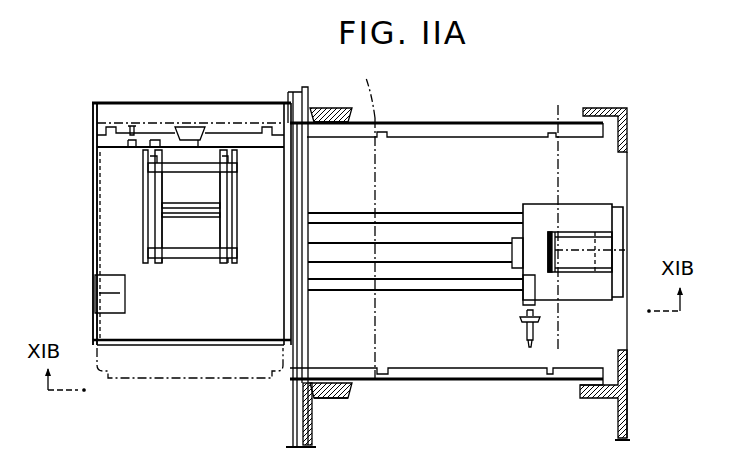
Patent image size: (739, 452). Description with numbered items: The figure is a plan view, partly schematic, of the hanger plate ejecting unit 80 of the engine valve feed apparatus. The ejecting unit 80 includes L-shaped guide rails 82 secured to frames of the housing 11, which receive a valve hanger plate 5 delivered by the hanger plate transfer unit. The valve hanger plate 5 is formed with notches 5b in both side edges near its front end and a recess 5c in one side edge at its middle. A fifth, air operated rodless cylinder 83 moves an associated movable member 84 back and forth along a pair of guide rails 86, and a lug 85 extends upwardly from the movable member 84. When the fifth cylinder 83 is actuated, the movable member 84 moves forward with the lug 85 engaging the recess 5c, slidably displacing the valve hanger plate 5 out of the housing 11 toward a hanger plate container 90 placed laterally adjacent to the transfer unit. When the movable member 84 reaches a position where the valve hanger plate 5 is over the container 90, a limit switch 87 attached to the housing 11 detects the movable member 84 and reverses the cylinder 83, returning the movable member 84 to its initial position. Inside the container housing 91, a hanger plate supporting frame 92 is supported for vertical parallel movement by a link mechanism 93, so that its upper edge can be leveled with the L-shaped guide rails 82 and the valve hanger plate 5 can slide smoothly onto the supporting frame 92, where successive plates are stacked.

The valve hanger plate 5 is at (381, 178).
The notches 5b is at (356, 87).
The recess 5c is at (596, 250).
The housing 11 is at (628, 371).
The hanger plate ejecting unit 80 is at (484, 117).
The L-shaped guide rails 82 is at (562, 119).
The fifth air operated rodless cylinder 83 is at (497, 263).
The movable member 84 is at (580, 302).
The lug 85 is at (555, 243).
The guide rails 86 is at (461, 212).
The limit switch 87 is at (536, 336).
The hanger plate container 90 is at (217, 100).
The container housing 91 is at (93, 215).
The hanger plate supporting frame 92 is at (261, 347).
The link mechanism 93 is at (193, 270).